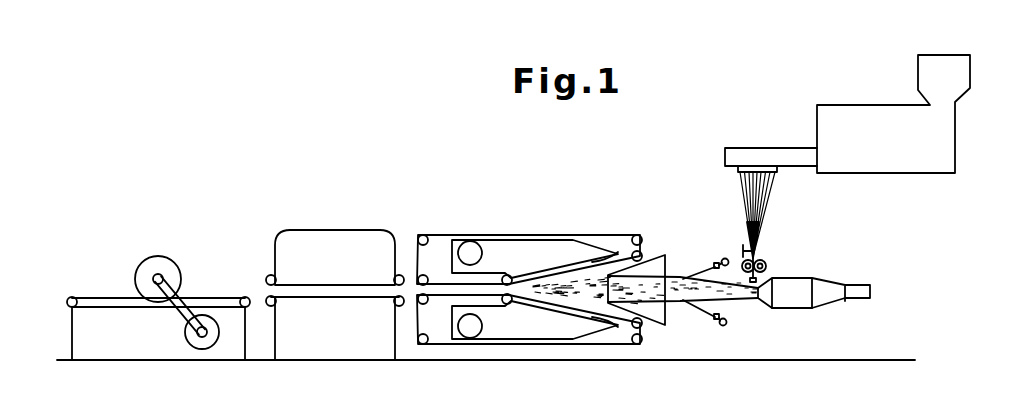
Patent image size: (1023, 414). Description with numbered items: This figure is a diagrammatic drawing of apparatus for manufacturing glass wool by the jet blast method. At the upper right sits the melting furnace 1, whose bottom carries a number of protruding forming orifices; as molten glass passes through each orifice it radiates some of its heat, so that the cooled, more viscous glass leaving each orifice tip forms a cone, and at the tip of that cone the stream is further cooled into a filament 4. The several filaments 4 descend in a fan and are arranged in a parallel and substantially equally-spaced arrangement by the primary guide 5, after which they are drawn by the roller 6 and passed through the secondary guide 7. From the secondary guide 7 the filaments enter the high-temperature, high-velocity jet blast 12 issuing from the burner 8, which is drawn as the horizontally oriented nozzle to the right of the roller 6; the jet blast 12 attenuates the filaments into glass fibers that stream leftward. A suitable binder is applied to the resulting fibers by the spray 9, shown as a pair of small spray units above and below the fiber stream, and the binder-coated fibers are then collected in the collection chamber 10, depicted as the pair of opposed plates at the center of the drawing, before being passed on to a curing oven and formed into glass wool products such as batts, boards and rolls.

The melting furnace 1 is at (737, 150).
The filament 4 is at (745, 184).
The primary guide 5 is at (762, 253).
The roller 6 is at (744, 261).
The secondary guide 7 is at (758, 279).
The burner 8 is at (796, 283).
The spray 9 is at (722, 259).
The collection chamber 10 is at (556, 234).
The jet blast 12 is at (787, 308).